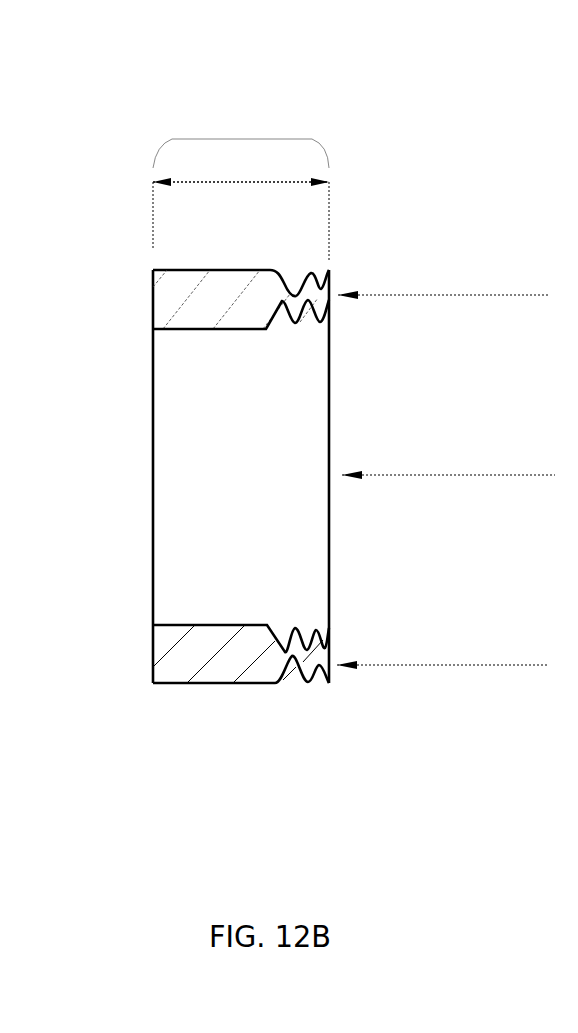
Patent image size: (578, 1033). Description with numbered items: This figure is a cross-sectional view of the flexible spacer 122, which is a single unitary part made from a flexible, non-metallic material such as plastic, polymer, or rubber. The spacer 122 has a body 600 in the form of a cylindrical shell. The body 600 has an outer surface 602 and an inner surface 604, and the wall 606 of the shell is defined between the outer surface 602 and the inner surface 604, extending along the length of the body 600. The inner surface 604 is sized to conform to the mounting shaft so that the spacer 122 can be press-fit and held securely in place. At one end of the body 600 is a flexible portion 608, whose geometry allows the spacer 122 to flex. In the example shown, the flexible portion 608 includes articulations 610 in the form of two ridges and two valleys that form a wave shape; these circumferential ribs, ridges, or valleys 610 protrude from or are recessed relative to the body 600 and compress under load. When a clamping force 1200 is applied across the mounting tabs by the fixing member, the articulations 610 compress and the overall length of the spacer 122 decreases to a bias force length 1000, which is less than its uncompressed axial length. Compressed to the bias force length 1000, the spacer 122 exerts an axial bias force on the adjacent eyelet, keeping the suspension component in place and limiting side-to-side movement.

The flexible spacer 122 is at (291, 114).
The bias force length 1000 is at (242, 139).
The body 600 is at (212, 287).
The outer surface 602 is at (248, 267).
The inner surface 604 is at (202, 329).
The wall 606 is at (167, 295).
The flexible portion 608 is at (352, 266).
The articulations 610 is at (308, 267).
The clamping force 1200 is at (435, 295).